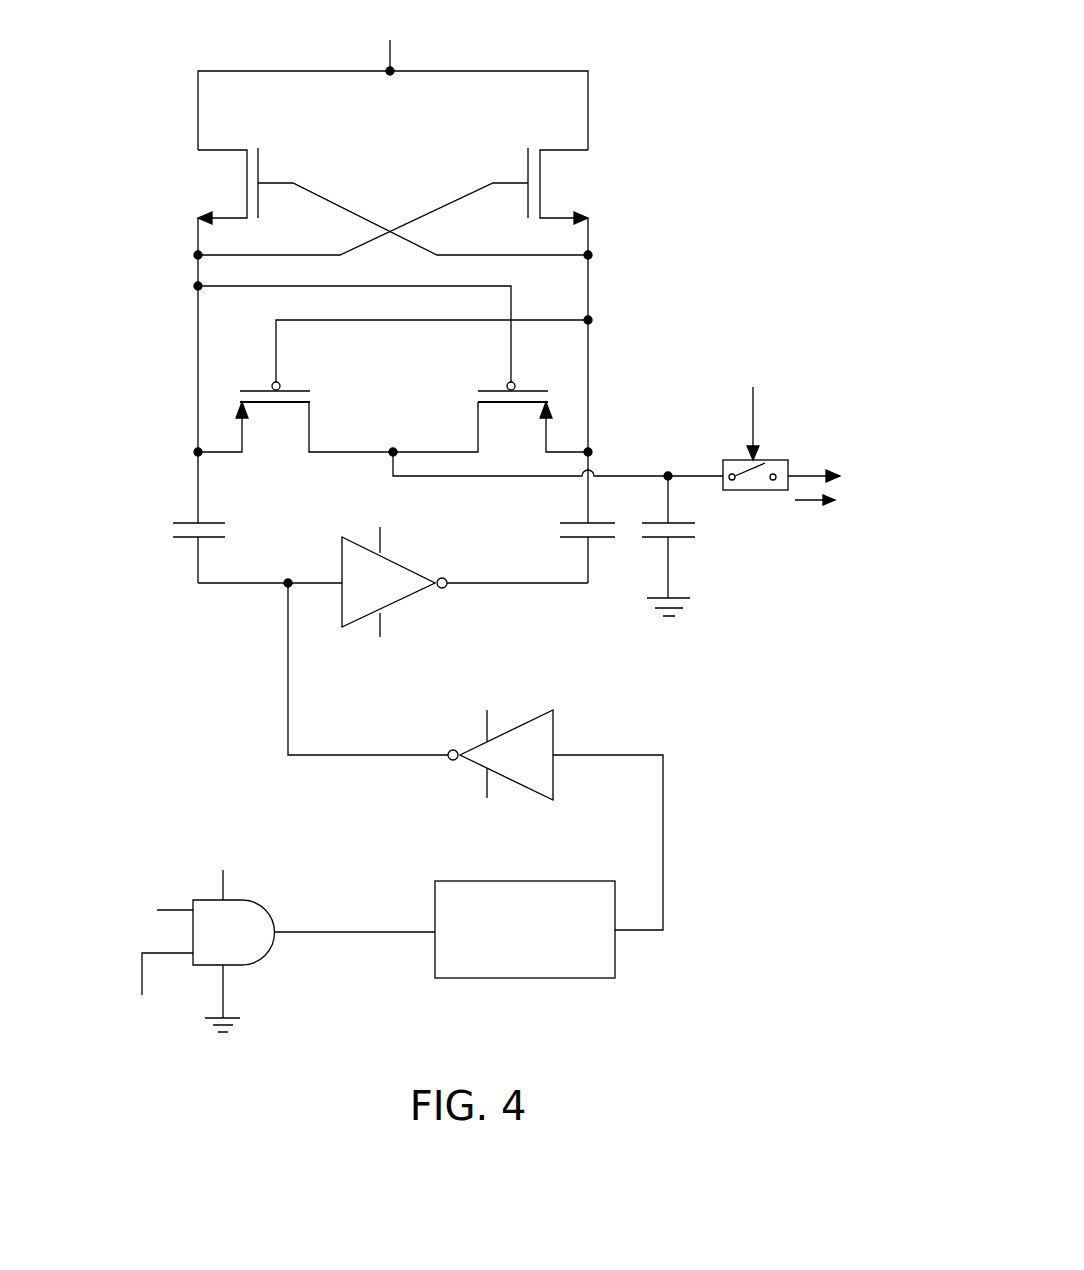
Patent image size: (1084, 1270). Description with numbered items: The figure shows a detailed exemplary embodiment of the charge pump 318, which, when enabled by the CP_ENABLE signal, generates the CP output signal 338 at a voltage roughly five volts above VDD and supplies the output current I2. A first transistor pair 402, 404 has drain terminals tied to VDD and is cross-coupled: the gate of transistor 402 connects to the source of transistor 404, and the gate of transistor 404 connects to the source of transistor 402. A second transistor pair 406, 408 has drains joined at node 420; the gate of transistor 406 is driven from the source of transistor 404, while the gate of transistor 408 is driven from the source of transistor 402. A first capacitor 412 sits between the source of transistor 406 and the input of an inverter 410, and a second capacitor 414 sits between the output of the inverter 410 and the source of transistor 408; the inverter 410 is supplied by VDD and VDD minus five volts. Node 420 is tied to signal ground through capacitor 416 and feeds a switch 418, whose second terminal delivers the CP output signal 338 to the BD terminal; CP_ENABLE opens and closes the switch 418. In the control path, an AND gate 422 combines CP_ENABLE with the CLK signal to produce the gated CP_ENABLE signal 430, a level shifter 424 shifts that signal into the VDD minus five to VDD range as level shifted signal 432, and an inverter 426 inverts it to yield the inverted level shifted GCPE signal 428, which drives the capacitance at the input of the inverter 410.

The charge pump 318 is at (738, 82).
The transistor 402 is at (227, 147).
The transistor 404 is at (558, 147).
The transistor 406 is at (298, 390).
The transistor 408 is at (493, 390).
The inverter 410 is at (342, 553).
The first capacitor 412 is at (213, 523).
The second capacitor 414 is at (580, 523).
The capacitor 416 is at (685, 538).
The switch 418 is at (732, 458).
The node 420 is at (395, 450).
The AND gate 422 is at (253, 900).
The level shifter 424 is at (550, 880).
The inverter 426 is at (555, 713).
The inverted level shifted GCPE signal 428 is at (288, 630).
The gated CP_ENABLE signal 430 is at (400, 932).
The level shifted GCPE signal 432 is at (665, 840).
The CP output signal 338 is at (805, 473).